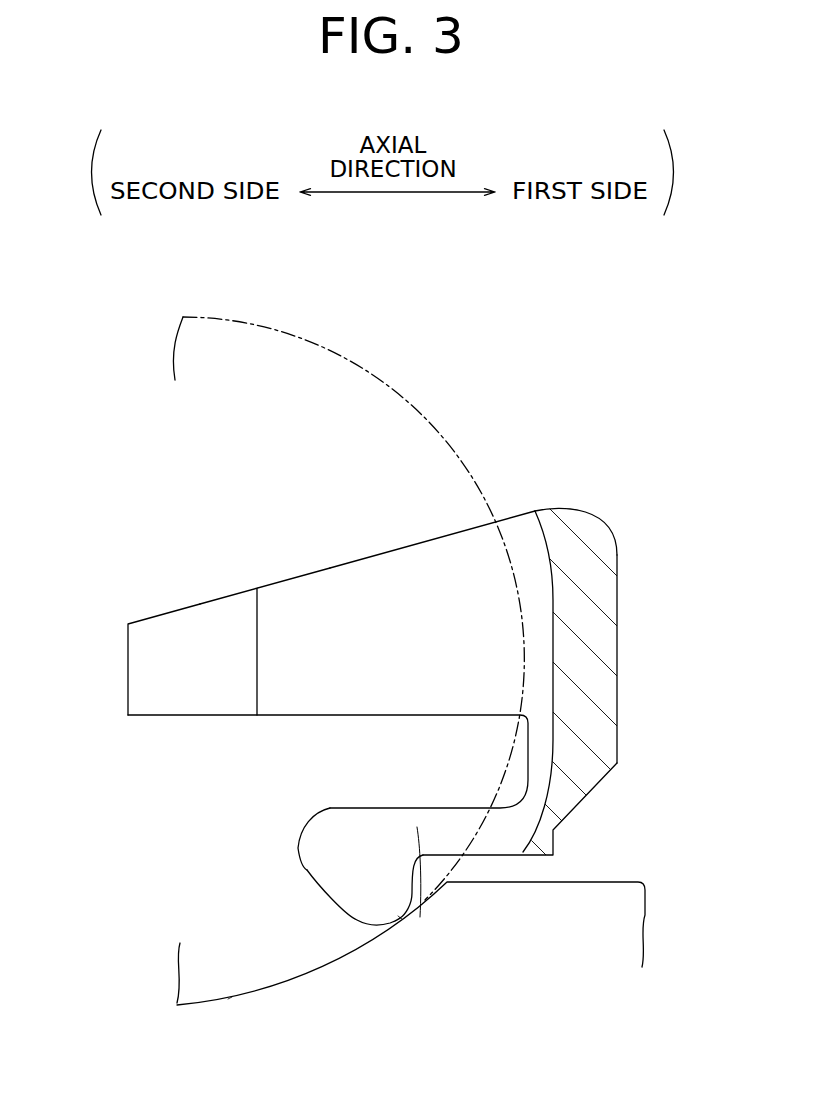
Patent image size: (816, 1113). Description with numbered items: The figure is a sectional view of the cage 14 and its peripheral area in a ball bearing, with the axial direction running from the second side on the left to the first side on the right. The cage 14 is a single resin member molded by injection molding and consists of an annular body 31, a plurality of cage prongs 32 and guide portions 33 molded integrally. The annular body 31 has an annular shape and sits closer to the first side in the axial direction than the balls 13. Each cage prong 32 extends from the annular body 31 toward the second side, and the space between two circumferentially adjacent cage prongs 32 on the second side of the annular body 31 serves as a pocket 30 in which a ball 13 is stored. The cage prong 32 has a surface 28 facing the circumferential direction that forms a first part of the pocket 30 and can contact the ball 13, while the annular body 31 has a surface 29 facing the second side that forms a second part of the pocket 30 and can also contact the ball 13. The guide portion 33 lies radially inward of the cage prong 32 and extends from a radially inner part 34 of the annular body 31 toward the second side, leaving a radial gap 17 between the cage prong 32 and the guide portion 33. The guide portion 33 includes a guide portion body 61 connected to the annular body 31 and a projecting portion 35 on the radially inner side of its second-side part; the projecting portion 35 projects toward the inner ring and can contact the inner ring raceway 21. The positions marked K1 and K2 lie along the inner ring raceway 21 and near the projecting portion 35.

The ball 13 is at (436, 432).
The cage 14 is at (583, 506).
The gap 17 is at (345, 742).
The inner ring raceway 21 is at (368, 948).
The surface 28 is at (383, 600).
The surface 29 is at (553, 645).
The pocket 30 is at (318, 600).
The annular body 31 is at (618, 667).
The cage prong 32 is at (128, 624).
The guide portion 33 is at (297, 841).
The radially inner part 34 is at (543, 837).
The projecting portion 35 is at (337, 884).
The guide portion body 61 is at (420, 918).
The first position K1 is at (230, 998).
The second position K2 is at (400, 917).